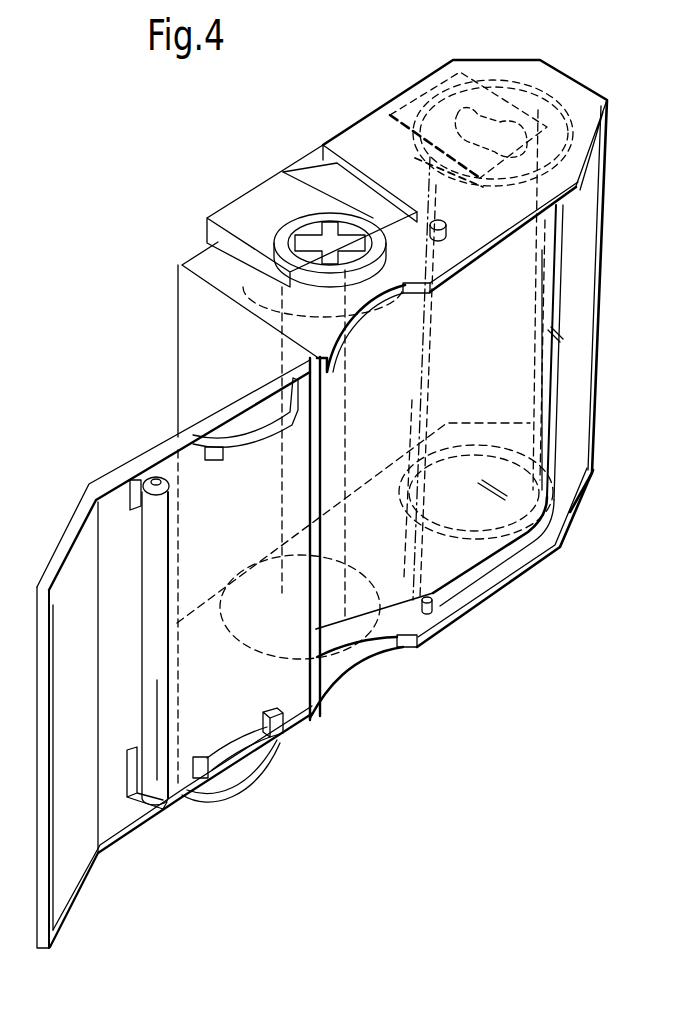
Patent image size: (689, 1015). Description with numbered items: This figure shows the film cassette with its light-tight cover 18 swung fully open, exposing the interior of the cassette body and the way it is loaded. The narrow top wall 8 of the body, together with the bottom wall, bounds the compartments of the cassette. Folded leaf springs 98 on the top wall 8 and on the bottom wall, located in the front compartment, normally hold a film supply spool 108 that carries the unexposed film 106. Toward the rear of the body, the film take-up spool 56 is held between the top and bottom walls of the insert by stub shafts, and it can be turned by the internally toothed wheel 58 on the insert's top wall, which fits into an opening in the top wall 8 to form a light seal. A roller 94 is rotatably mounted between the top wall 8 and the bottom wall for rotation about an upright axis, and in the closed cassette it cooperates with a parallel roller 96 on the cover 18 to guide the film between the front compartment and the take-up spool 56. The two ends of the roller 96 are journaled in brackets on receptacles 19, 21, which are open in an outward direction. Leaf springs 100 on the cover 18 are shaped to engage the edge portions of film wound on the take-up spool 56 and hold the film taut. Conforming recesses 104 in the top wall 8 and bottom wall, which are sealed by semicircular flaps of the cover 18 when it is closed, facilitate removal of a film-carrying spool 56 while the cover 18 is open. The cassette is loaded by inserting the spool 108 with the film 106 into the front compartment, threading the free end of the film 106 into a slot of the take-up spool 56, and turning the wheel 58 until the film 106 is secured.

The top wall 8 is at (550, 73).
The folded leaf springs 98 is at (413, 102).
The internally toothed wheel 58 is at (303, 222).
The recesses 104 is at (372, 300).
The film take-up spool 56 is at (352, 650).
The unexposed film 106 is at (460, 567).
The film supply spool 108 is at (560, 507).
The roller 94 is at (433, 603).
The leaf springs 100 is at (222, 452).
The light-tight cover 18 is at (130, 813).
The roller 96 is at (160, 697).
The receptacle 19 is at (130, 503).
The receptacle 21 is at (127, 780).